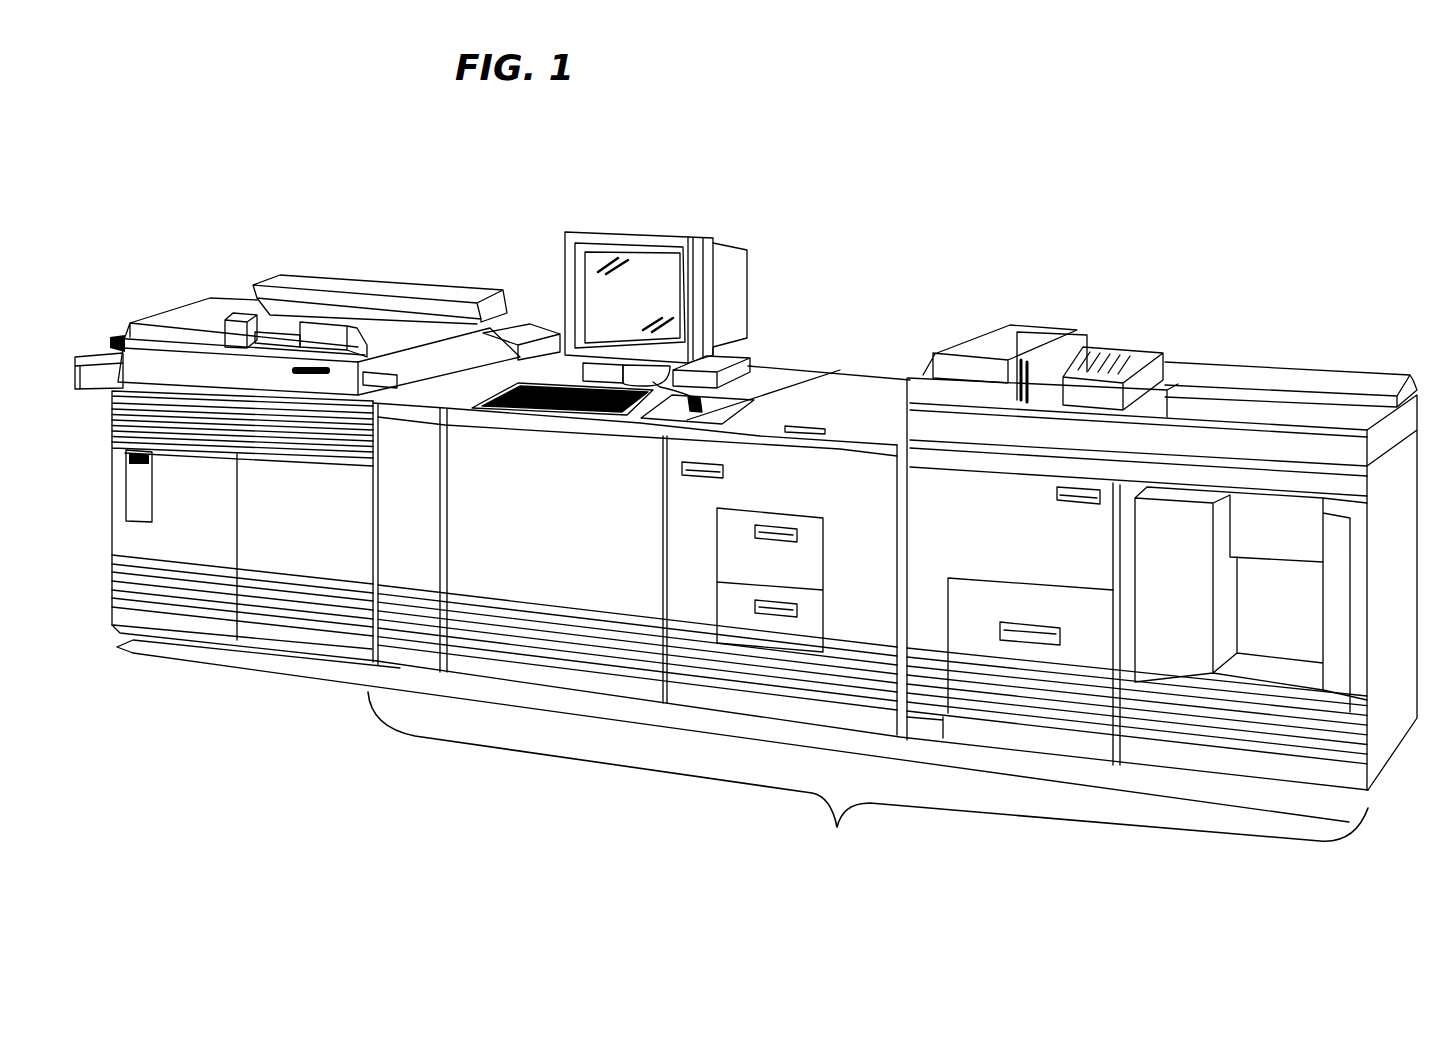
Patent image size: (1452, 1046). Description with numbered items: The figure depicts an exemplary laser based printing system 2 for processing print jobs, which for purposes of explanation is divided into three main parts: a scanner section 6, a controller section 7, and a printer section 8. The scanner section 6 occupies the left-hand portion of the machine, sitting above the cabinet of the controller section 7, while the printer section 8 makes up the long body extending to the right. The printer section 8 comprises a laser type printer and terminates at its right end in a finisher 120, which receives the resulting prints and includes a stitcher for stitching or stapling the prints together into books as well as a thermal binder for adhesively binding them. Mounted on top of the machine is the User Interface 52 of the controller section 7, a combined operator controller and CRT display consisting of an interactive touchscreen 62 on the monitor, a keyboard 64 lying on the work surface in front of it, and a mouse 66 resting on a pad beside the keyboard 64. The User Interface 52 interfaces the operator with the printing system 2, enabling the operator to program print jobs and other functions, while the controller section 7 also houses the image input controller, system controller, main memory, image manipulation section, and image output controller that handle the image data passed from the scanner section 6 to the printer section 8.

The printing system 2 is at (889, 140).
The scanner section 6 is at (356, 240).
The controller section 7 is at (96, 528).
The printer section 8 is at (834, 856).
The user interface 52 is at (661, 210).
The interactive touchscreen 62 is at (596, 303).
The keyboard 64 is at (547, 425).
The mouse 66 is at (655, 426).
The finisher 120 is at (1264, 330).